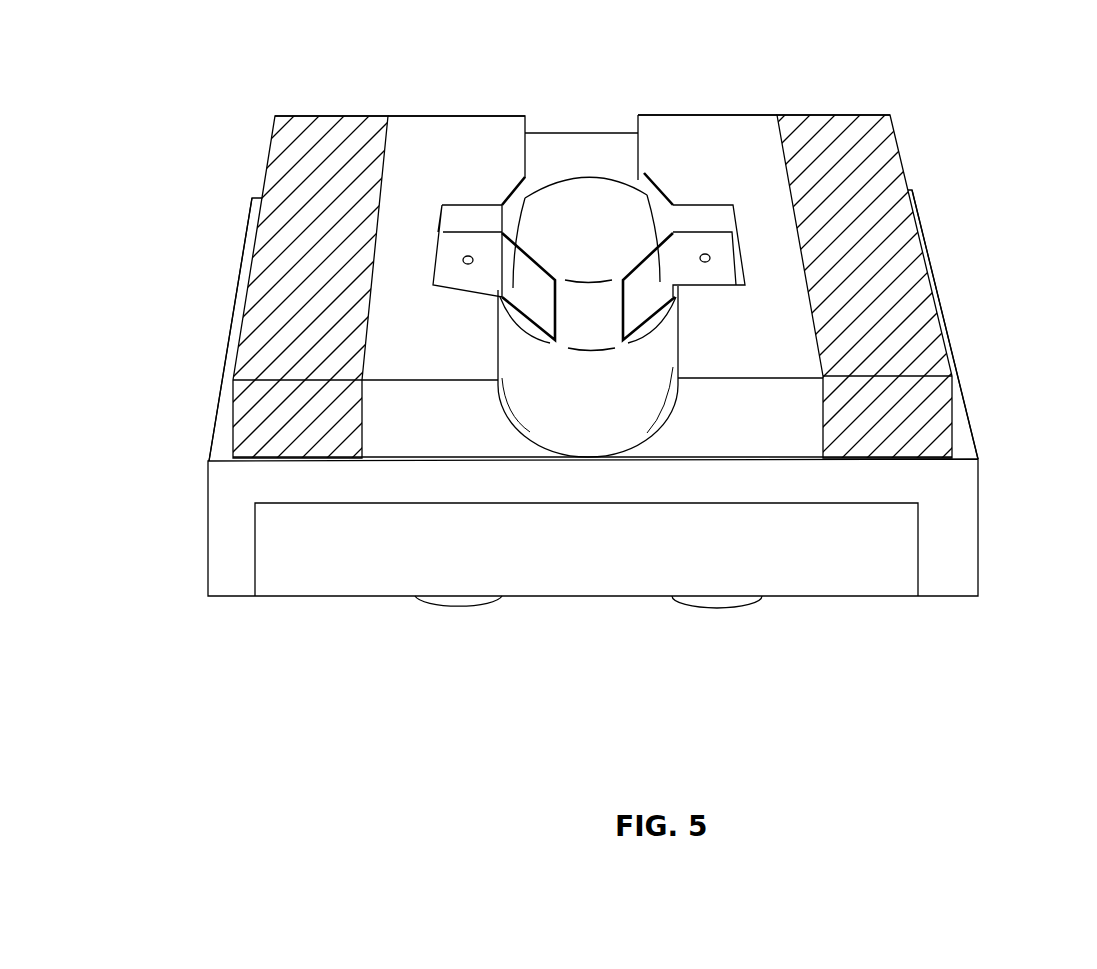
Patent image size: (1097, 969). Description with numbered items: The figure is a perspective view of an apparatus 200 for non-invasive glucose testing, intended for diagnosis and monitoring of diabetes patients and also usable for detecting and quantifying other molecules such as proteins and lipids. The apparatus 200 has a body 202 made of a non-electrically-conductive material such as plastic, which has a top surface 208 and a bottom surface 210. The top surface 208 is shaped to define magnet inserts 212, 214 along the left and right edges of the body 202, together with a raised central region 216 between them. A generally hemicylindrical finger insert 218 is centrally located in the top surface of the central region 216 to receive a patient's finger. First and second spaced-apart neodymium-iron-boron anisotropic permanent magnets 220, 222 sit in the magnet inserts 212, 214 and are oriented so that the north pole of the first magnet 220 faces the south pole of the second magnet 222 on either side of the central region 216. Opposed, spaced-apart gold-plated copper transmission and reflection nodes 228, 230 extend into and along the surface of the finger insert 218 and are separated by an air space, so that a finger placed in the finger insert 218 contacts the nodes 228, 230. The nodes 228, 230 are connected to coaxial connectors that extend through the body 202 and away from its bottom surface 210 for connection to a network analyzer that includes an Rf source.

The apparatus 200 is at (970, 118).
The body 202 is at (778, 543).
The top surface 208 is at (738, 153).
The bottom surface 210 is at (523, 598).
The magnet insert 212 is at (218, 450).
The magnet insert 214 is at (965, 437).
The raised central region 216 is at (443, 150).
The finger insert 218 is at (597, 415).
The first permanent magnet 220 is at (338, 147).
The second permanent magnet 222 is at (852, 142).
The transmission node 228 is at (524, 198).
The reflection node 230 is at (646, 196).